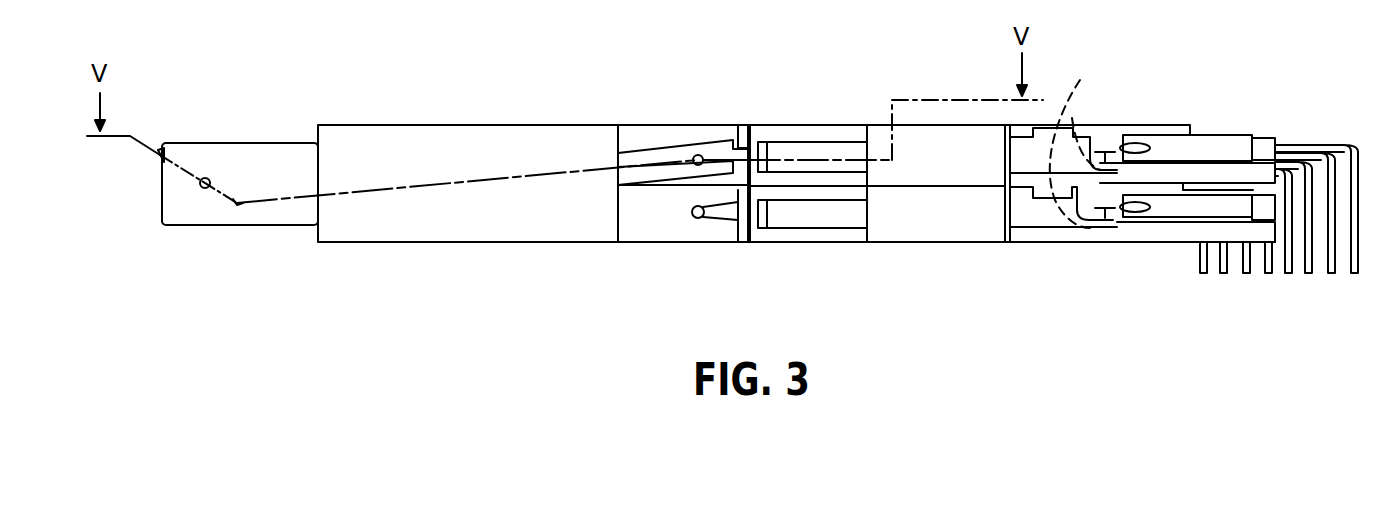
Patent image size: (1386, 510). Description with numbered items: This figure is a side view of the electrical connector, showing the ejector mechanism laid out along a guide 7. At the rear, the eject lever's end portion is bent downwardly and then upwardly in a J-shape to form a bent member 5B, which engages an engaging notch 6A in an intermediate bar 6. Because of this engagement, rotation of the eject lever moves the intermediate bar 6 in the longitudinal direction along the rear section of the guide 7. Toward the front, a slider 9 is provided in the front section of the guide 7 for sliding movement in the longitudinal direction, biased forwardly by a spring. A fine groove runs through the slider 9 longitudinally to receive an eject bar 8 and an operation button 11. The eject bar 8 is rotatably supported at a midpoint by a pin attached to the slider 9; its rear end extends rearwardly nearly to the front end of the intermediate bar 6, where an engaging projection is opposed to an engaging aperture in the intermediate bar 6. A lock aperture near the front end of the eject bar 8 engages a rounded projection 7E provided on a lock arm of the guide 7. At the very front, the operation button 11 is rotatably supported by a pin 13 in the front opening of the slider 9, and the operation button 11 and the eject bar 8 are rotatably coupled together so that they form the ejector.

The slider 9 is at (217, 213).
The operation button 11 is at (157, 153).
The pin 13 is at (203, 187).
The guide 7 is at (493, 135).
The eject bar 8 is at (658, 152).
The rounded projection 7E is at (703, 217).
The intermediate bar 6 is at (810, 165).
The engaging notch 6A is at (1077, 139).
The bent member 5B is at (1122, 220).